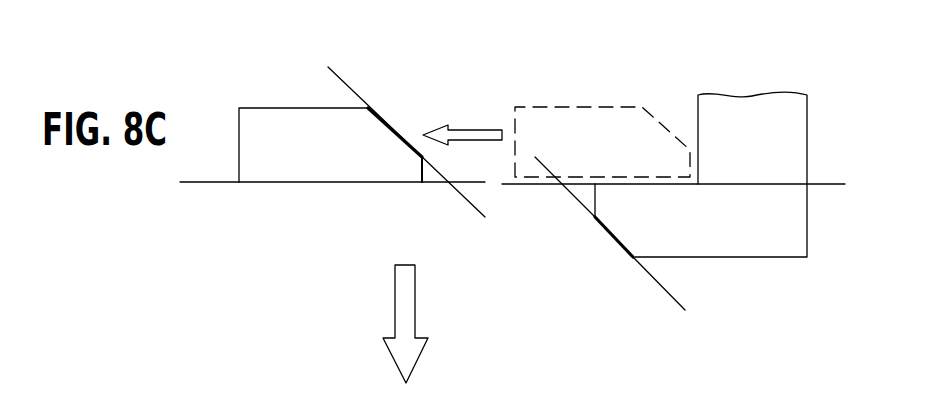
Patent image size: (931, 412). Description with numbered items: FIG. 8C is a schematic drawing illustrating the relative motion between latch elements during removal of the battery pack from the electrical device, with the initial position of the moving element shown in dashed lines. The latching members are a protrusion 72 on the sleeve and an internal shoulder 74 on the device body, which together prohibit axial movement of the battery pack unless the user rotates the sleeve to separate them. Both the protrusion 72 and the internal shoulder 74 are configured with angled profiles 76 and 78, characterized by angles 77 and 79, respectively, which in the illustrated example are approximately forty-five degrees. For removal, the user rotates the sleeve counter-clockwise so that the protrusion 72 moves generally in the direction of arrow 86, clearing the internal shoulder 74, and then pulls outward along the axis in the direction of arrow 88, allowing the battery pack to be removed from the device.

The protrusion 72 is at (290, 125).
The internal shoulder 74 is at (638, 222).
The angled profile 76 is at (382, 115).
The angle 77 is at (430, 175).
The angled profile 78 is at (621, 243).
The angle 79 is at (583, 193).
The arrow 86 is at (475, 135).
The arrow 88 is at (405, 305).